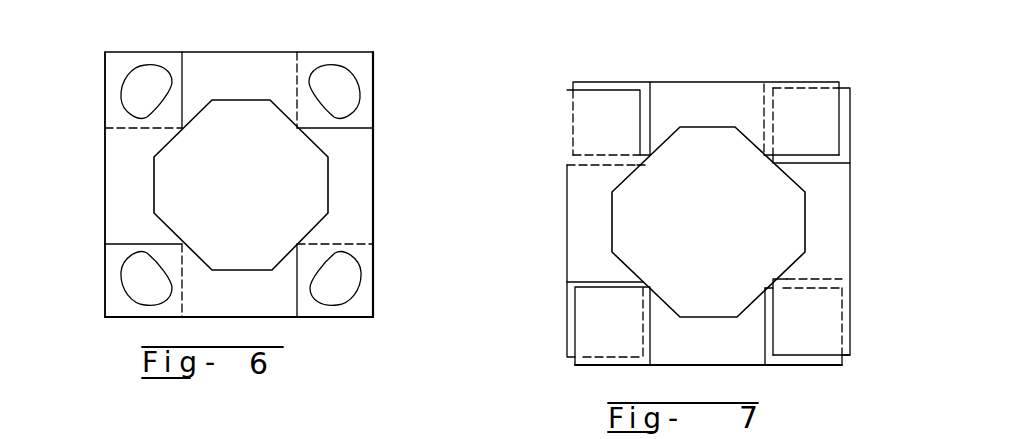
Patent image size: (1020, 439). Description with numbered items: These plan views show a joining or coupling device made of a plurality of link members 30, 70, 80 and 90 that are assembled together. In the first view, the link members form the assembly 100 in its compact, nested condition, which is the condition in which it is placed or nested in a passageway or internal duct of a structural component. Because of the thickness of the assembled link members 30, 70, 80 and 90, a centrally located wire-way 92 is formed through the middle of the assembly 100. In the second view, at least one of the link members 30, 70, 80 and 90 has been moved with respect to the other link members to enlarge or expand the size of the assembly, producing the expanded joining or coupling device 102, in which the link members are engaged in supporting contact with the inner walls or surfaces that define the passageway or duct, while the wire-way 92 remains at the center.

In FIG. 6, the link member 30 is at (289, 324).
In FIG. 7, the link member 30 is at (752, 372).
In FIG. 6, the link member 70 is at (393, 225).
In FIG. 7, the link member 70 is at (858, 205).
In FIG. 6, the link member 80 is at (208, 43).
In FIG. 7, the link member 80 is at (700, 73).
In FIG. 6, the link member 90 is at (90, 235).
In FIG. 6, the wire-way 92 is at (187, 160).
In FIG. 7, the wire-way 92 is at (640, 203).
In FIG. 6, the assembly of link members 100 is at (133, 327).
In FIG. 7, the expanded joining or coupling device 102 is at (583, 368).